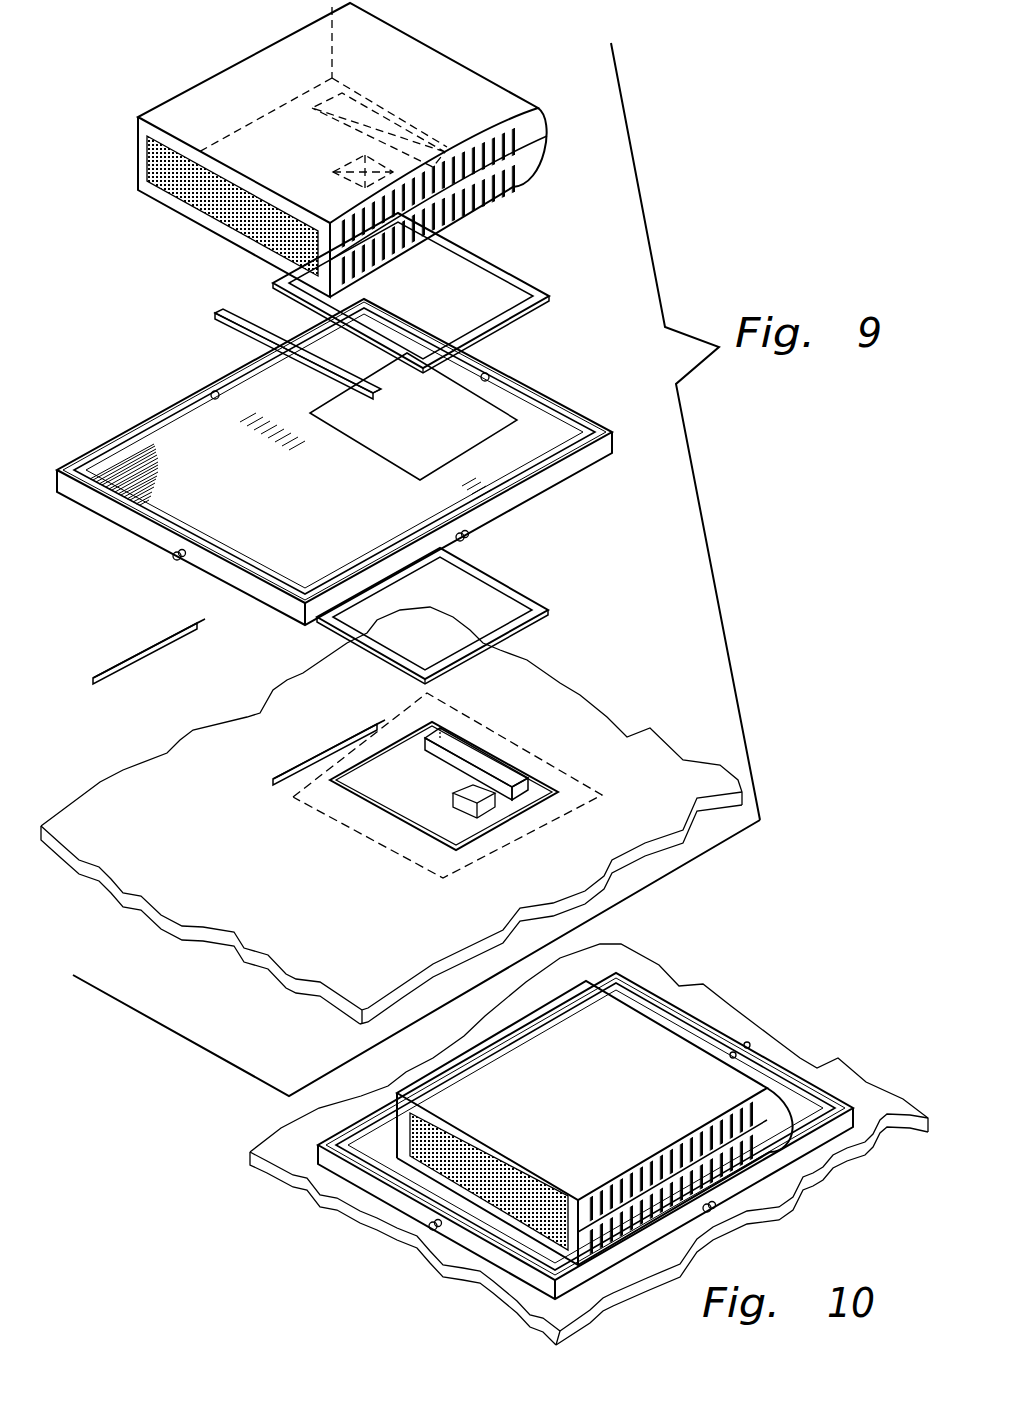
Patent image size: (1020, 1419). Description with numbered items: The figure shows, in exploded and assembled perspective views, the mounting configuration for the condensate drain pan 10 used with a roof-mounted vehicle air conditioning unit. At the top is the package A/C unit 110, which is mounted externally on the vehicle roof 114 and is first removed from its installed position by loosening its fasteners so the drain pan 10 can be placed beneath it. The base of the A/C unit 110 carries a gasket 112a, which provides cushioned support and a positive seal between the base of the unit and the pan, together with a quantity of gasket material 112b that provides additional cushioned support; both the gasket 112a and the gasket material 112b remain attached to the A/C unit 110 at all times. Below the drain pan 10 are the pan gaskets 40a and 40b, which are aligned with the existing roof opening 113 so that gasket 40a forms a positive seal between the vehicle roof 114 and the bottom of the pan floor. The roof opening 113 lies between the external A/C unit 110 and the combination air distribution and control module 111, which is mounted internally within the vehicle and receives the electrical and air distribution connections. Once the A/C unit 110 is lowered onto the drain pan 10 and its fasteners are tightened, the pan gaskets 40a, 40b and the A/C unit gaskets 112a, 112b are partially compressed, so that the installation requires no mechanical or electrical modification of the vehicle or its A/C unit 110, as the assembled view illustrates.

The drain pan 10 is at (146, 404).
The A/C unit 110 is at (220, 110).
The gasket 112a is at (513, 273).
The gasket material 112b is at (222, 312).
The gasket 40a is at (537, 597).
The pan gasket 40b is at (166, 657).
The roof opening 113 is at (423, 735).
The air distribution and control module 111 is at (430, 804).
The vehicle roof 114 is at (318, 886).